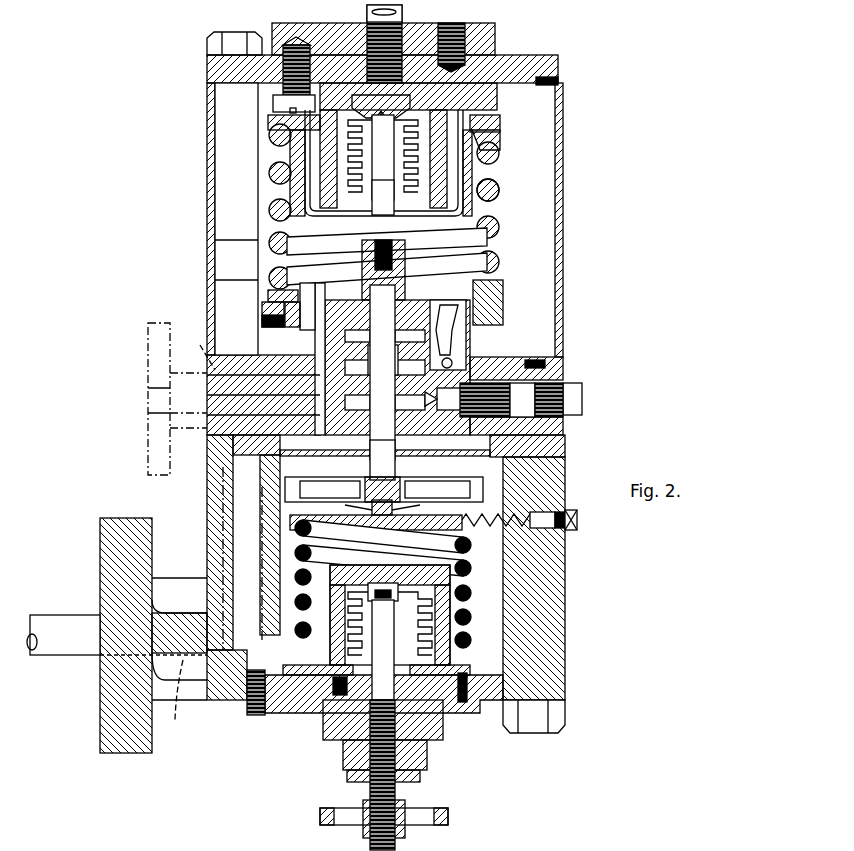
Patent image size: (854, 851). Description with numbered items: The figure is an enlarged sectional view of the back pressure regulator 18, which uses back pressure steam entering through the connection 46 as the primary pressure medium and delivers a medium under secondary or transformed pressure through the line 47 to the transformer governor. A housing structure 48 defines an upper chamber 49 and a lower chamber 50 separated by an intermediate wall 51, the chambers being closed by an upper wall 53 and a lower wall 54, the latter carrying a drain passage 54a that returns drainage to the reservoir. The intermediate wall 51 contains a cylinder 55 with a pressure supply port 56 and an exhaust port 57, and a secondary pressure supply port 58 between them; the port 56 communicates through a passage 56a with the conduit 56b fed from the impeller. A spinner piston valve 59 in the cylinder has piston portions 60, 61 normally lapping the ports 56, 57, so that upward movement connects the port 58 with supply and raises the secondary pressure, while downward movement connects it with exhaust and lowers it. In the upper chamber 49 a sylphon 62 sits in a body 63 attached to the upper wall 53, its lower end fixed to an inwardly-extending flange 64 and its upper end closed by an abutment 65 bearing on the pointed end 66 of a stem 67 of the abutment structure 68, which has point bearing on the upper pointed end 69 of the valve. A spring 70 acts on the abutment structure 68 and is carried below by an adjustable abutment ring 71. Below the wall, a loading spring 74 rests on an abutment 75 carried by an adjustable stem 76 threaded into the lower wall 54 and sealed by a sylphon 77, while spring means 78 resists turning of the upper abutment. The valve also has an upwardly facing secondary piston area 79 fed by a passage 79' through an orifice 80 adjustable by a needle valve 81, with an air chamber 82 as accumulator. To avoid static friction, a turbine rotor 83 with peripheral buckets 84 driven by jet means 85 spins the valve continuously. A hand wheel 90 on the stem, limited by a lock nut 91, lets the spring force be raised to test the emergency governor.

The back pressure regulator 18 is at (197, 258).
The connection 46 is at (402, 14).
The line 47 is at (150, 404).
The housing structure 48 is at (563, 322).
The upper chamber 49 is at (540, 272).
The lower chamber 50 is at (530, 580).
The intermediate wall 51 is at (560, 445).
The upper wall 53 is at (510, 58).
The lower wall 54 is at (500, 705).
The drain passage 54a is at (258, 718).
The cylinder 55 is at (420, 458).
The pressure supply port 56 is at (310, 360).
The passage 56a is at (187, 532).
The conduit 56b is at (65, 655).
The exhaust port 57 is at (345, 457).
The secondary pressure supply port 58 is at (330, 400).
The spinner piston valve 59 is at (408, 292).
The piston portion 60 is at (383, 372).
The piston portion 61 is at (383, 435).
The sylphon 62 is at (475, 146).
The body 63 is at (485, 105).
The inwardly-extending flange 64 is at (460, 236).
The abutment 65 is at (372, 100).
The pointed end 66 is at (381, 122).
The stem 67 is at (348, 152).
The abutment structure 68 is at (480, 210).
The upper pointed end 69 is at (362, 287).
The spring 70 is at (498, 188).
The abutment ring 71 is at (500, 120).
The loading spring 74 is at (298, 548).
The abutment 75 is at (305, 650).
The adjustable stem 76 is at (372, 700).
The sylphon 77 is at (465, 660).
The spring means 78 is at (505, 528).
The secondary piston area 79 is at (383, 361).
The passage 79' is at (512, 351).
The orifice 80 is at (455, 420).
The needle valve 81 is at (480, 440).
The air chamber 82 is at (458, 330).
The turbine rotor 83 is at (460, 505).
The peripheral buckets 84 is at (483, 485).
The jet means 85 is at (262, 505).
The hand wheel 90 is at (448, 817).
The lock nut 91 is at (420, 777).